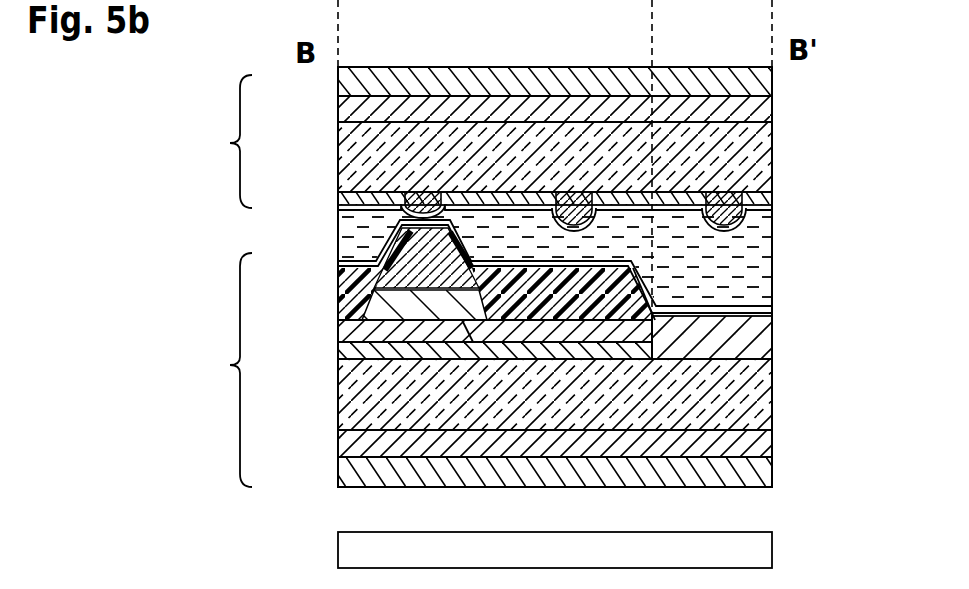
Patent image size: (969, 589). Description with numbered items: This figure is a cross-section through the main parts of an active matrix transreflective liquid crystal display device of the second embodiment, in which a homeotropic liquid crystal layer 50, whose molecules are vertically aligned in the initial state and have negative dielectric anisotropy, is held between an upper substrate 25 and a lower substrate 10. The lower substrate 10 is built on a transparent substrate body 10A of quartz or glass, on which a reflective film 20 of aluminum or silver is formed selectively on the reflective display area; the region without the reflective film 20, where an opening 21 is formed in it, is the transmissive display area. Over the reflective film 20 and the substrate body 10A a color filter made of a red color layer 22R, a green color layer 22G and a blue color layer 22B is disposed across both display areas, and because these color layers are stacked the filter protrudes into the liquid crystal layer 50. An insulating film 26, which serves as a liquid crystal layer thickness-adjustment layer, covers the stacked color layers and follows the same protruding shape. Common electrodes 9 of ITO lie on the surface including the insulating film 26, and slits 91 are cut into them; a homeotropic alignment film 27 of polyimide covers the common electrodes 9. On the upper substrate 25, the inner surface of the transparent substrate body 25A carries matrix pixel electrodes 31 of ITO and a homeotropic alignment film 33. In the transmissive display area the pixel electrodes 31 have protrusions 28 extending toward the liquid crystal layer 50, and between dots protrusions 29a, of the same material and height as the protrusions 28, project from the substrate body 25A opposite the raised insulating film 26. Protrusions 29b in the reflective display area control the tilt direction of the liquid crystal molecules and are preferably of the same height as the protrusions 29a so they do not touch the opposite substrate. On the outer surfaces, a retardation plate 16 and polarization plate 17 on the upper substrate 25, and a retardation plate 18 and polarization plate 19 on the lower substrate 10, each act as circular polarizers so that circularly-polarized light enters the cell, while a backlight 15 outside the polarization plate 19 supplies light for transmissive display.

The polarization plate 17 is at (772, 72).
The retardation plate 16 is at (772, 101).
The substrate body 25A is at (772, 139).
The upper substrate 25 is at (222, 141).
The pixel electrodes 31 is at (772, 194).
The alignment film 33 is at (772, 209).
The protrusions 29a is at (398, 212).
The protrusions 29b is at (574, 202).
The liquid crystal layer 50 is at (772, 240).
The protrusions 28 is at (772, 265).
The slits 91 is at (497, 264).
The homeotropic alignment film 27 is at (772, 307).
The common electrodes 9 is at (772, 314).
The green color layer 22G is at (338, 293).
The insulating film 26 is at (338, 319).
The blue color layer 22B is at (338, 340).
The reflective film 20 is at (338, 360).
The red color layer 22R is at (773, 358).
The opening 21 is at (648, 300).
The substrate body 10A is at (772, 411).
The retardation plate 18 is at (772, 445).
The polarization plate 19 is at (772, 473).
The lower substrate 10 is at (223, 370).
The backlight 15 is at (760, 548).